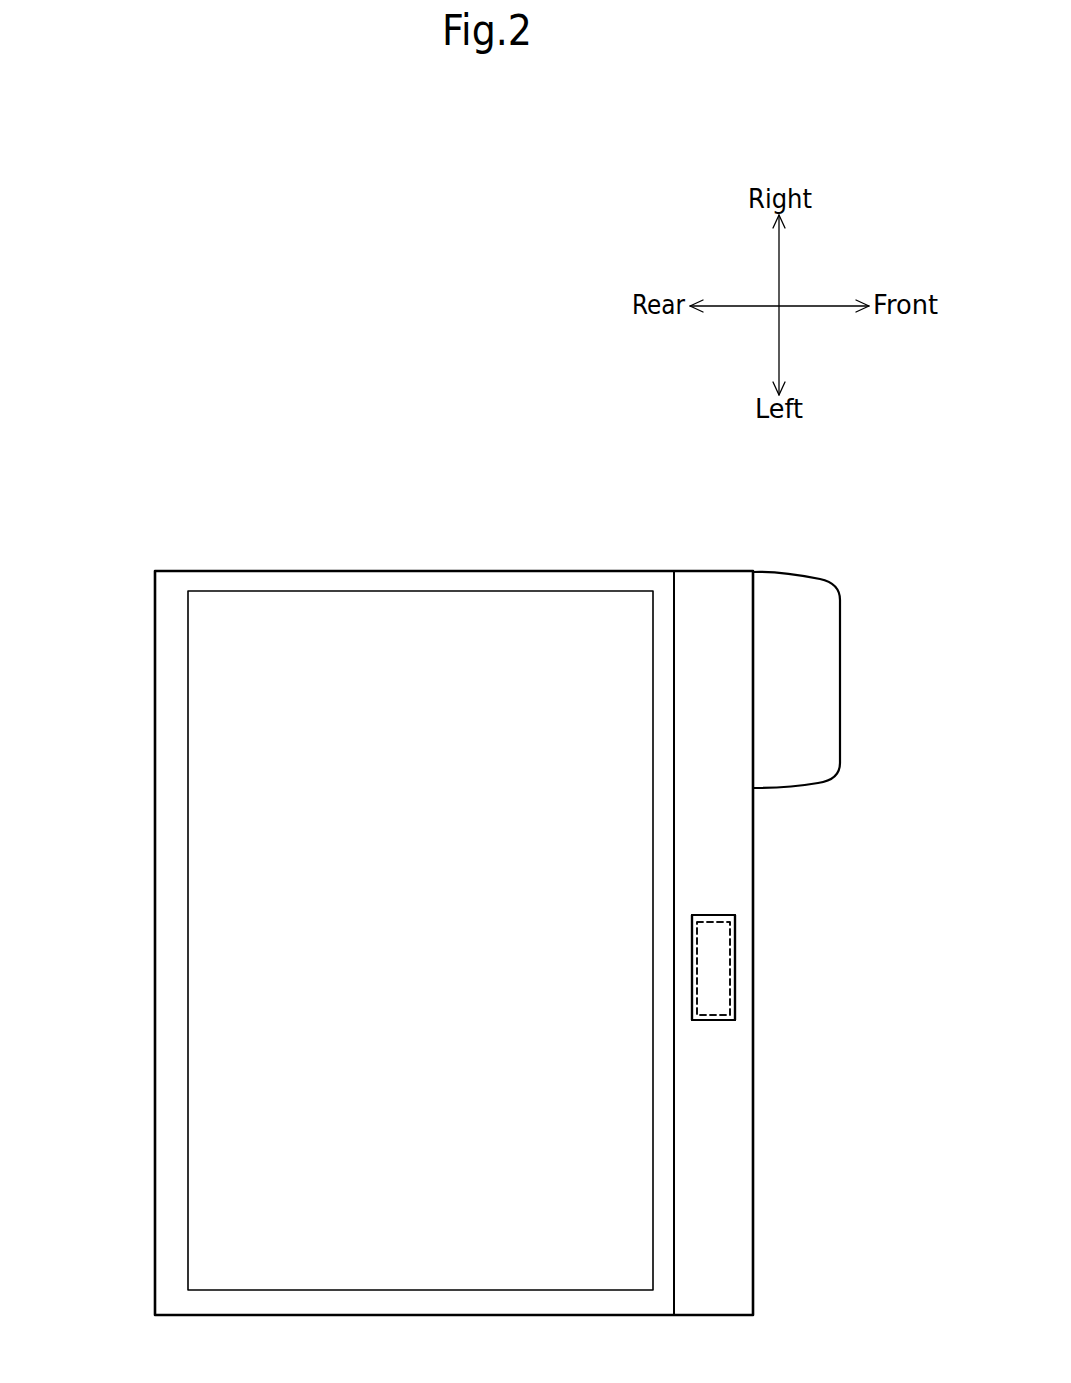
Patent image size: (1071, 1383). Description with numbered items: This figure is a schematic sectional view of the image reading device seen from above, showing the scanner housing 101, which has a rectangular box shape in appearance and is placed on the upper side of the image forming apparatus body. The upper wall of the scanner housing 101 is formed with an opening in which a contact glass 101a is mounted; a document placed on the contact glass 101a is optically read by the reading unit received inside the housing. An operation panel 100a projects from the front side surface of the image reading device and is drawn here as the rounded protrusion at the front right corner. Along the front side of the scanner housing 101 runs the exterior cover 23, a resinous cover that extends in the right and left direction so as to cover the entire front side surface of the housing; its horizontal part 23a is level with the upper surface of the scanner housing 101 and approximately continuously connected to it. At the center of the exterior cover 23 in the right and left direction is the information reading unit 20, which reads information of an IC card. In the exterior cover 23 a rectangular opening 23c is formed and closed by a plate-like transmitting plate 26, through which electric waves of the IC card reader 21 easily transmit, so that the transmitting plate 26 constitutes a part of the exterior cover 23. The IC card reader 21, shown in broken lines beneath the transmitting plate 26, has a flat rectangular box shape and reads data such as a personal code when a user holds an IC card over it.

The scanner housing 101 is at (313, 571).
The contact glass 101a is at (280, 777).
The operation panel 100a is at (792, 572).
The information reading unit 20 is at (727, 912).
The transmitting plate 26 is at (713, 968).
The opening 23c is at (735, 966).
The IC card reader 21 is at (715, 1022).
The horizontal part 23a is at (799, 943).
The exterior cover 23 is at (715, 1167).